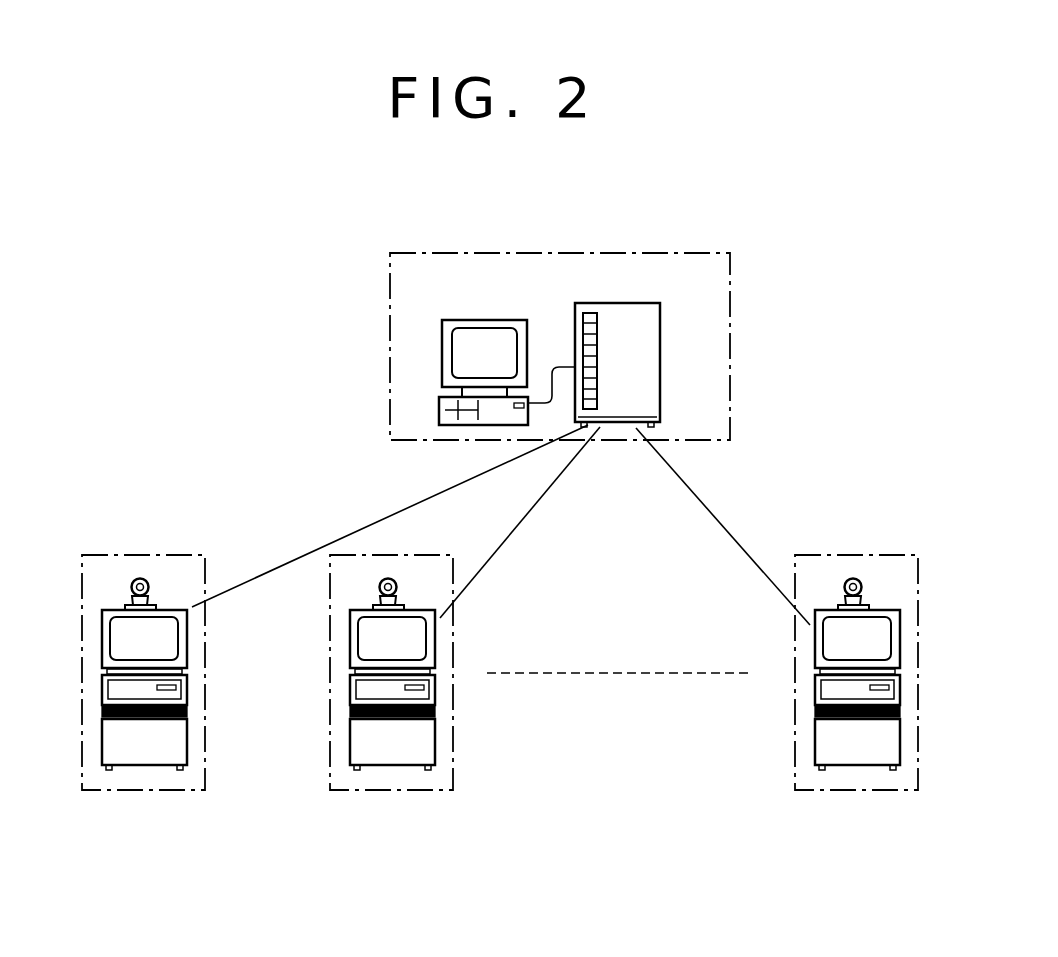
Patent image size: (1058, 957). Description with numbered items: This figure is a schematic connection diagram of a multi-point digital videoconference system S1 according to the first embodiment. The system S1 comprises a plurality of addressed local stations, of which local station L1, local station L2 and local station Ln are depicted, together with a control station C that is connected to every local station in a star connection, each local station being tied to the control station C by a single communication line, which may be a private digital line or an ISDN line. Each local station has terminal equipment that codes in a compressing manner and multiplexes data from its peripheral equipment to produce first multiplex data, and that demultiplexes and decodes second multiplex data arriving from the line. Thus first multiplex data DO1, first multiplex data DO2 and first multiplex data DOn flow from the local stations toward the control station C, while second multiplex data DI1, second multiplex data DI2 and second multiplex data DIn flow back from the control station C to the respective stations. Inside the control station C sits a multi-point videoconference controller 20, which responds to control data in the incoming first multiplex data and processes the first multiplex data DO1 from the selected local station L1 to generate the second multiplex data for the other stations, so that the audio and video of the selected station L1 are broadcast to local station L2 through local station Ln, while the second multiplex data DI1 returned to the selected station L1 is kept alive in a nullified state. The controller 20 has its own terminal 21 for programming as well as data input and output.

The multi-point videoconference controller 20 is at (660, 376).
The terminal 21 is at (442, 358).
The control station C is at (730, 336).
The multi-point digital videoconference system S1 is at (813, 378).
The local station L1 is at (207, 690).
The local station L2 is at (457, 675).
The local station Ln is at (920, 663).
The first multiplex data DO1 is at (445, 480).
The second multiplex data DI1 is at (455, 507).
The first multiplex data DO2 is at (529, 500).
The second multiplex data DI2 is at (550, 518).
The second multiplex data DIn is at (667, 452).
The first multiplex data DOn is at (658, 471).